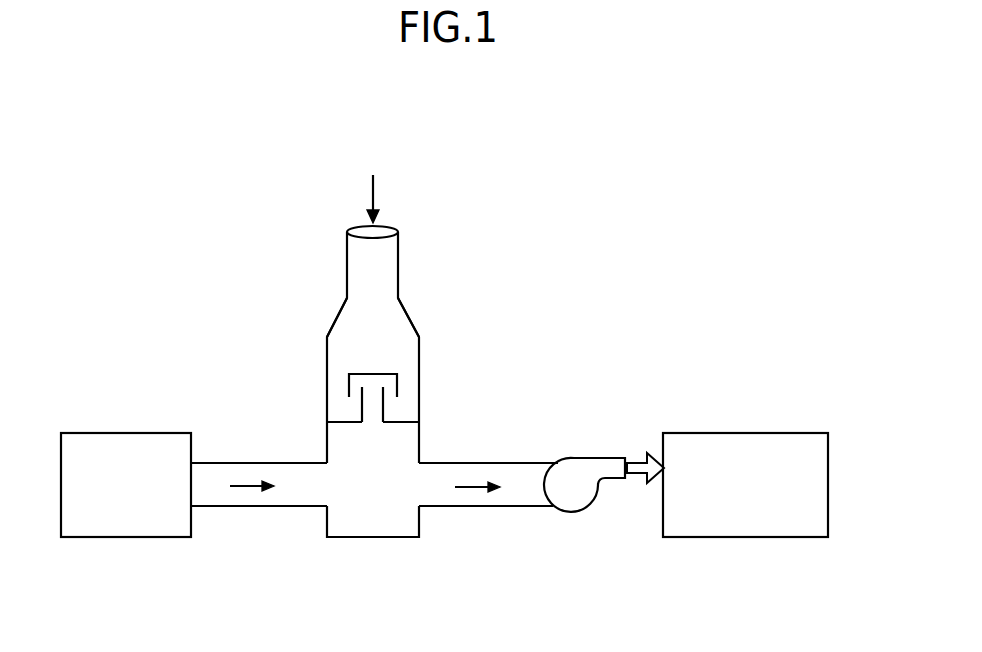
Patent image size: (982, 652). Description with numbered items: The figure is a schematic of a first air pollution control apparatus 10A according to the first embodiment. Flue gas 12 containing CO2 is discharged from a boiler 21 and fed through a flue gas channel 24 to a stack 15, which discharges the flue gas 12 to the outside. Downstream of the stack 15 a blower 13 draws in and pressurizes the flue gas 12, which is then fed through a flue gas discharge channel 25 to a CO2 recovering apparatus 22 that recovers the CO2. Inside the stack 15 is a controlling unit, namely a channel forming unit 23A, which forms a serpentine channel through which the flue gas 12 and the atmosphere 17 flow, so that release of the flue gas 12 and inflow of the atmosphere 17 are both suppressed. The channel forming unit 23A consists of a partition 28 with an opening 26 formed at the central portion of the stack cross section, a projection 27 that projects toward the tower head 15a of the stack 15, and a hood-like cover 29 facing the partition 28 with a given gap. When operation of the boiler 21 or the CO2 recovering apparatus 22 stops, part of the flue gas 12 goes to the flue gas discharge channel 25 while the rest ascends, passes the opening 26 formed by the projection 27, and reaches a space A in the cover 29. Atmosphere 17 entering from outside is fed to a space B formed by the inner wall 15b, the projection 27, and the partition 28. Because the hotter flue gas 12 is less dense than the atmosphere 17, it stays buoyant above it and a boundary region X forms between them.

The first air pollution control apparatus 10A is at (229, 156).
The flue gas 12 is at (463, 548).
The blower 13 is at (577, 512).
The stack 15 is at (347, 258).
The tower head 15a is at (347, 232).
The inner wall 15b is at (325, 337).
The atmosphere 17 is at (376, 195).
The boiler 21 is at (124, 433).
The CO2 recovering apparatus 22 is at (728, 433).
The channel forming unit 23A is at (610, 447).
The flue gas channel 24 is at (231, 506).
The flue gas discharge channel 25 is at (517, 506).
The opening 26 is at (373, 403).
The projection 27 is at (402, 408).
The partition 28 is at (412, 420).
The cover 29 is at (373, 374).
The space A is at (357, 385).
The boundary region X is at (355, 402).
The space B is at (353, 412).